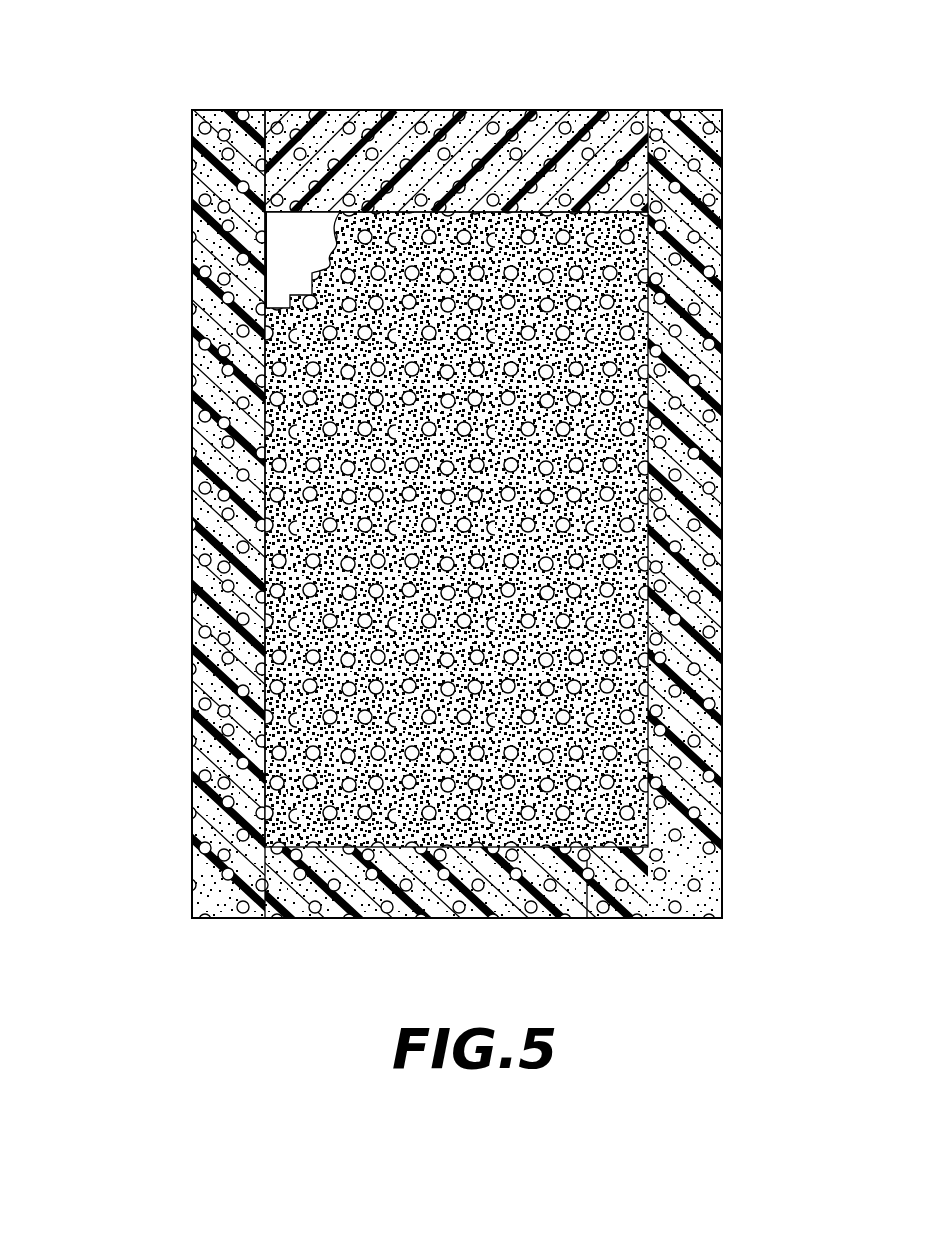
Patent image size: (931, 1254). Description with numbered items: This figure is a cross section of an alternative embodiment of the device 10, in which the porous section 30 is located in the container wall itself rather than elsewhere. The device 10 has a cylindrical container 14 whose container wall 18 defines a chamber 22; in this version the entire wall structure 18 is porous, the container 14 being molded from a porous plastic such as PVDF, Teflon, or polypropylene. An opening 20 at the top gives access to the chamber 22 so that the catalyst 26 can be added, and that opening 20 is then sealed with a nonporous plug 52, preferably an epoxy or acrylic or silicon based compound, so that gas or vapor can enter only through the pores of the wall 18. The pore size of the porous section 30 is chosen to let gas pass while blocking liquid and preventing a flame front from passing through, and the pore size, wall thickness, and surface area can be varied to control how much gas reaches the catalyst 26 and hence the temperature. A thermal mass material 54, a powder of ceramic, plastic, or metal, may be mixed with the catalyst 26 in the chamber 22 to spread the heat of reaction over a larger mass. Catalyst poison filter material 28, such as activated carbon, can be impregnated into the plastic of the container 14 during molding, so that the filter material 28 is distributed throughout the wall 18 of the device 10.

The device 10 is at (190, 148).
The cylindrical container 14 is at (192, 833).
The container wall 18 is at (723, 843).
The opening 20 is at (287, 233).
The chamber 22 is at (286, 252).
The catalyst 26 is at (455, 828).
The catalyst poison filter material 28 is at (192, 372).
The porous section 30 is at (192, 452).
The nonporous plug 52 is at (488, 110).
The thermal mass material 54 is at (588, 852).